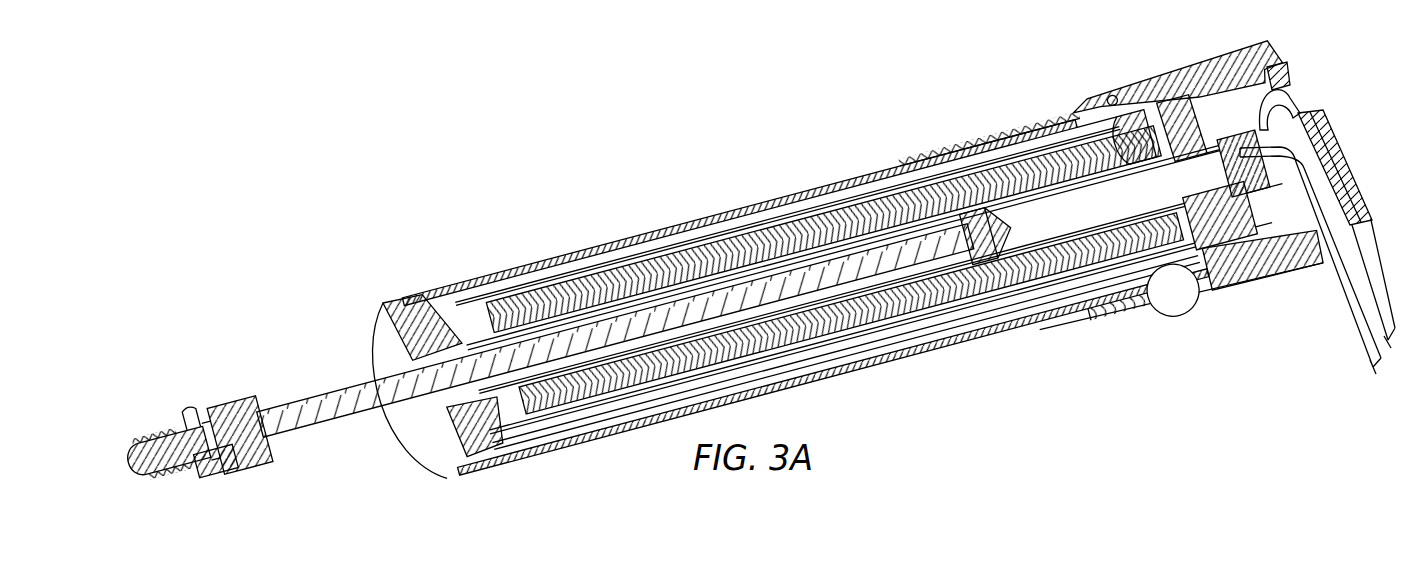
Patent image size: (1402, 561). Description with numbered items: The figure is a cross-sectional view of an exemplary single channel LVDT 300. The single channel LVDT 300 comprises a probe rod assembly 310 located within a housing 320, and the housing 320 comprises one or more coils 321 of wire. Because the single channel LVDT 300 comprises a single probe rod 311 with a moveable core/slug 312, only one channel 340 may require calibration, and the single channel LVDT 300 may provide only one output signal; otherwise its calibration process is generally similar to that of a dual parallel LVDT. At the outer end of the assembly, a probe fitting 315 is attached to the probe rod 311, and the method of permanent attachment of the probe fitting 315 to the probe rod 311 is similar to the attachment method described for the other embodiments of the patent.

The single channel LVDT 300 is at (270, 298).
The channel 340 is at (552, 243).
The housing 320 is at (667, 226).
The coils 321 is at (777, 257).
The moveable core/slug 312 is at (920, 267).
The probe rod 311 is at (350, 388).
The probe rod assembly 310 is at (187, 408).
The probe fitting 315 is at (253, 450).